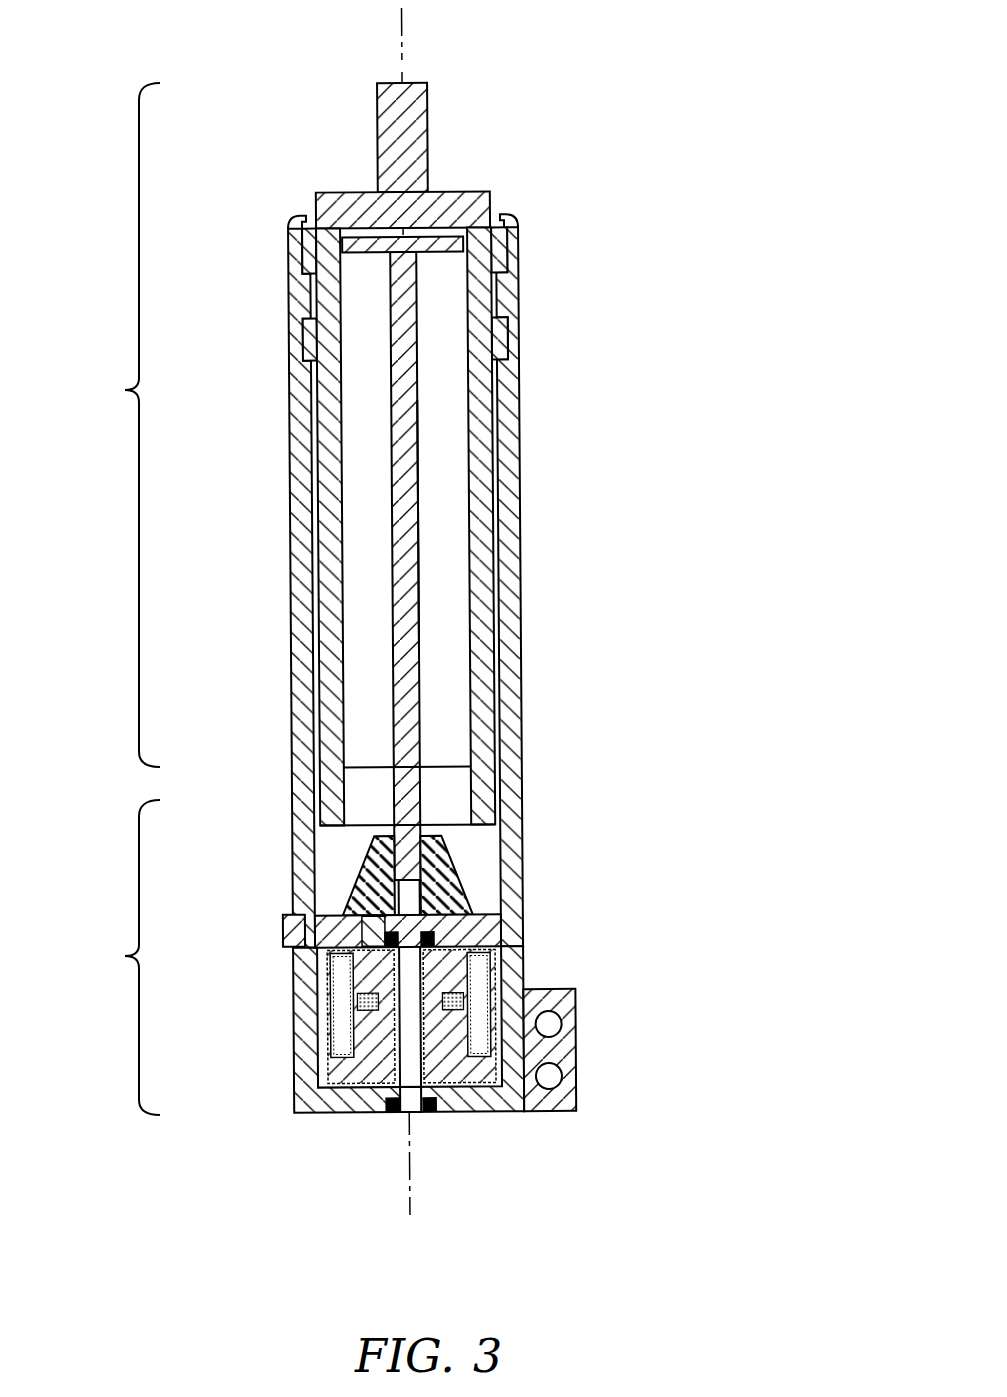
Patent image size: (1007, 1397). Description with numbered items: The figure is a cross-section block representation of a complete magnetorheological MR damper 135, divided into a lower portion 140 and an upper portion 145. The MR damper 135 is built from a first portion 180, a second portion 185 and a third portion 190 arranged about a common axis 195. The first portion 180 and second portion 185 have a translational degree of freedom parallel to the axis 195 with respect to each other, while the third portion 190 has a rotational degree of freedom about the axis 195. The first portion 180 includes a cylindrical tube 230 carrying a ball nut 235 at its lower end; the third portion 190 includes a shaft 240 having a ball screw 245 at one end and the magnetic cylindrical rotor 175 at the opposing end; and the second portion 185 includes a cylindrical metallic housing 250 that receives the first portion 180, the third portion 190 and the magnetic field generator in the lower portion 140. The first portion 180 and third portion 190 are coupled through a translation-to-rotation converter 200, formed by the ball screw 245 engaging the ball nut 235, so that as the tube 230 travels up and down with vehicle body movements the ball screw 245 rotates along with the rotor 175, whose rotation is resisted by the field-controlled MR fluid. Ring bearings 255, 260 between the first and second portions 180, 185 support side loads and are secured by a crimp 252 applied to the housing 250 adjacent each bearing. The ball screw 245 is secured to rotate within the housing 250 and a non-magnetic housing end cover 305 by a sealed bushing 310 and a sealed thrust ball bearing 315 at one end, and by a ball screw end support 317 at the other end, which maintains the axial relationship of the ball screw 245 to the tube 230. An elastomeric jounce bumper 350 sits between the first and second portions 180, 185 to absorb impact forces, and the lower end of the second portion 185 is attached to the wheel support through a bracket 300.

The MR damper 135 is at (840, 83).
The lower portion 140 is at (109, 957).
The upper portion 145 is at (109, 425).
The magnetic cylindrical rotor 175 is at (506, 928).
The first portion 180 is at (501, 203).
The second portion 185 is at (533, 893).
The third portion 190 is at (430, 657).
The axis 195 is at (405, 43).
The translation-to-rotation converter 200 is at (460, 754).
The cylindrical tube 230 is at (470, 390).
The ball nut 235 is at (464, 826).
The shaft 240 is at (501, 911).
The ball screw 245 is at (421, 528).
The housing 250 is at (519, 413).
The crimp 252 is at (302, 218).
The ring bearing 255 is at (501, 252).
The ring bearing 260 is at (508, 340).
The bracket 300 is at (578, 1080).
The housing end cover 305 is at (492, 1113).
The sealed bushing 310 is at (428, 1113).
The sealed thrust ball bearing 315 is at (353, 935).
The ball screw end support 317 is at (364, 253).
The jounce bumper 350 is at (458, 867).